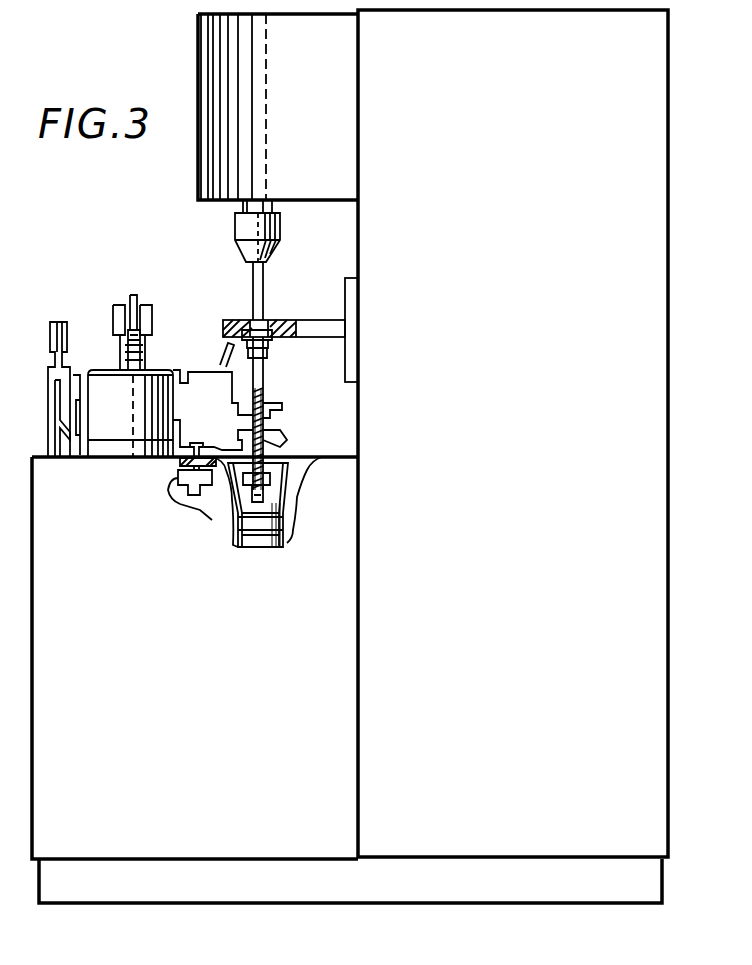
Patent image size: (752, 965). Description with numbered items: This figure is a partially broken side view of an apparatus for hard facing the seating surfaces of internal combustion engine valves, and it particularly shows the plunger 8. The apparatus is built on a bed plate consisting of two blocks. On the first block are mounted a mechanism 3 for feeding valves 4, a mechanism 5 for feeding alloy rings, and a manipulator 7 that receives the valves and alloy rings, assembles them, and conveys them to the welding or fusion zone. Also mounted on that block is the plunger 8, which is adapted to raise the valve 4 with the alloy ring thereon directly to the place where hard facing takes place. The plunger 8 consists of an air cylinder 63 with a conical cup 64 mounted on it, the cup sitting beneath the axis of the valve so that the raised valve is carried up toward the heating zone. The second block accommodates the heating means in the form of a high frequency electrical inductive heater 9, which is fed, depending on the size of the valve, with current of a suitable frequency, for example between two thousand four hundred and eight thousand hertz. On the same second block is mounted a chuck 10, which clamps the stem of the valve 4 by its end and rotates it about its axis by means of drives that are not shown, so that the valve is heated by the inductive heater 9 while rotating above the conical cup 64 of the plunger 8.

The mechanism for feeding valves 3 is at (133, 296).
The valve 4 is at (263, 290).
The mechanism for feeding alloy rings 5 is at (60, 322).
The manipulator 7 is at (98, 370).
The plunger 8 is at (236, 522).
The high frequency electrical inductive heater 9 is at (228, 320).
The chuck 10 is at (236, 232).
The air cylinder 63 is at (258, 547).
The conical cup 64 is at (298, 458).